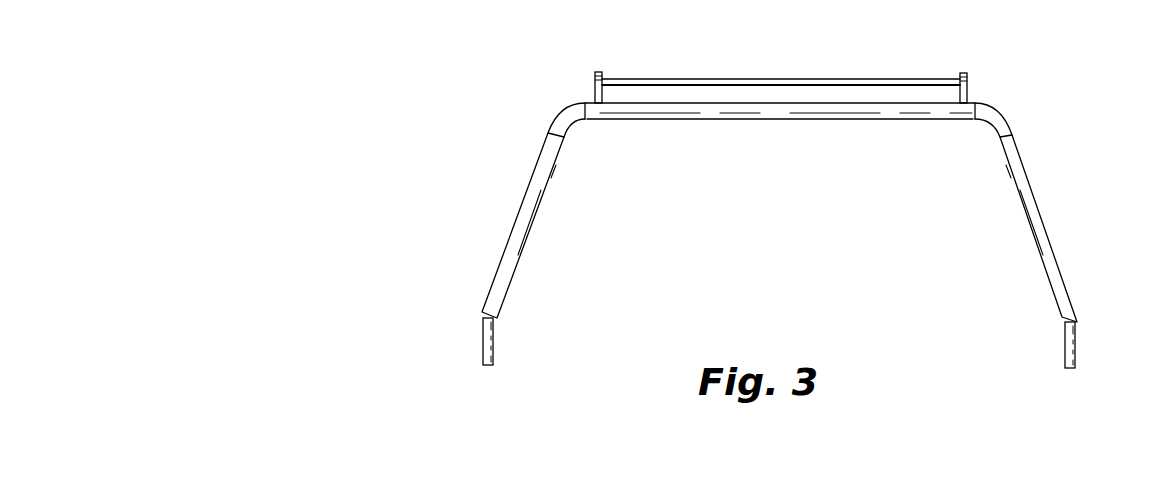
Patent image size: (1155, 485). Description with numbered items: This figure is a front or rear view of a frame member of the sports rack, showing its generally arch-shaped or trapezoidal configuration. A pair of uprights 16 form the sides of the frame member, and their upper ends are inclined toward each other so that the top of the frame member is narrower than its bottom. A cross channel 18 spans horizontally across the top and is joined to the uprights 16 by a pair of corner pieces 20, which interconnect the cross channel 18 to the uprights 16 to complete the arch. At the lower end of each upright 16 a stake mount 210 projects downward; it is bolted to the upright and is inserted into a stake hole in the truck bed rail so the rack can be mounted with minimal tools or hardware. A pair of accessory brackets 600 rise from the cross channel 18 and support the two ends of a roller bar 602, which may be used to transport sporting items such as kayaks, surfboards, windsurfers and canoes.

The upright 16 is at (520, 208).
The cross channel 18 is at (902, 115).
The corner piece 20 is at (570, 112).
The stake mount 210 is at (482, 348).
The accessory bracket 600 is at (596, 72).
The roller bar 602 is at (846, 79).